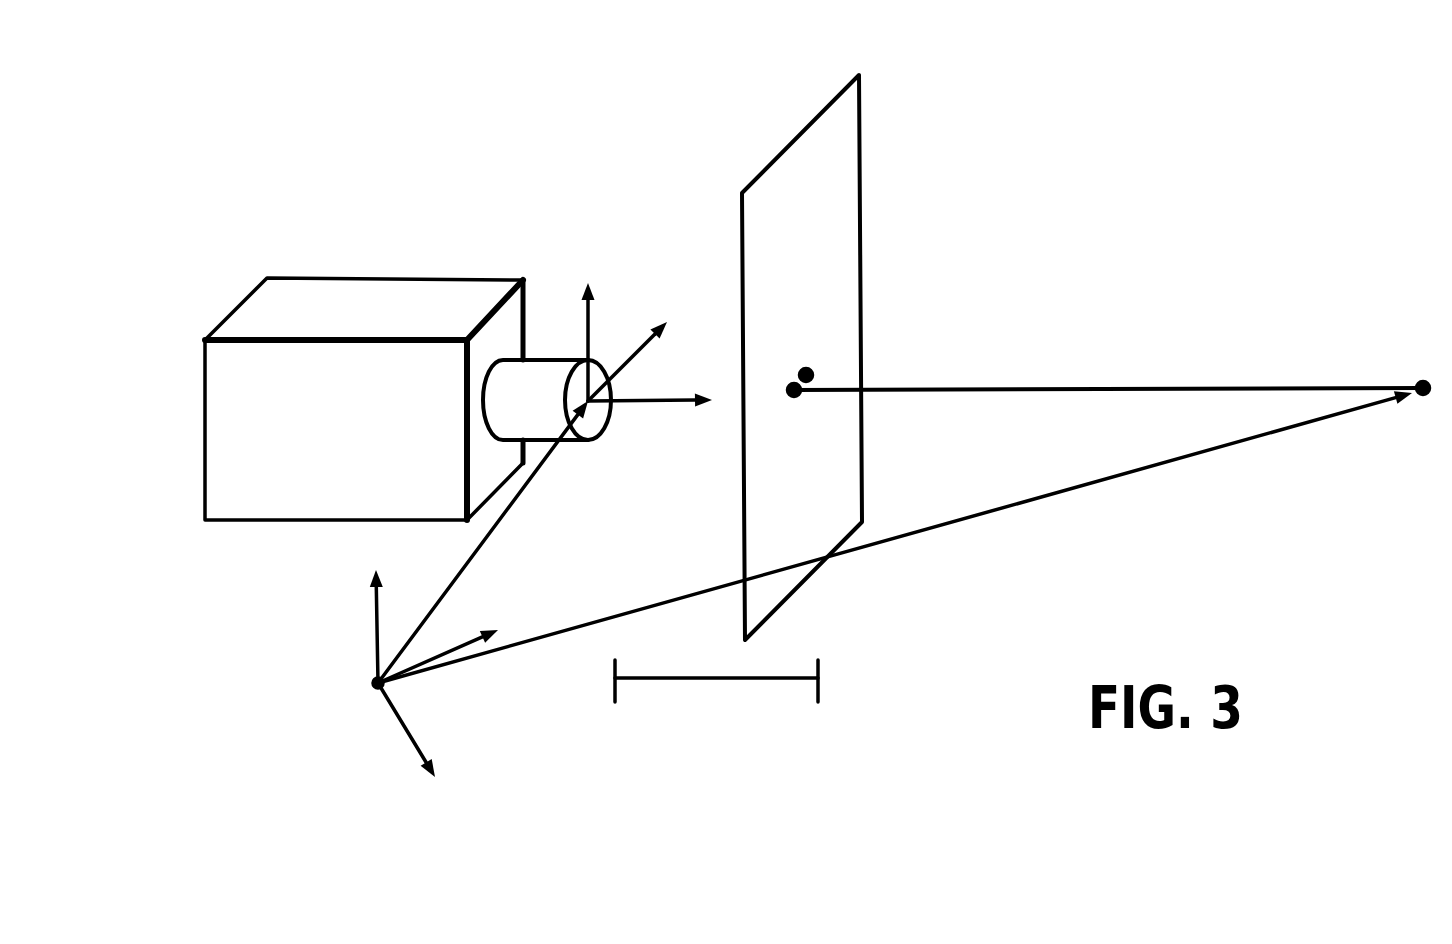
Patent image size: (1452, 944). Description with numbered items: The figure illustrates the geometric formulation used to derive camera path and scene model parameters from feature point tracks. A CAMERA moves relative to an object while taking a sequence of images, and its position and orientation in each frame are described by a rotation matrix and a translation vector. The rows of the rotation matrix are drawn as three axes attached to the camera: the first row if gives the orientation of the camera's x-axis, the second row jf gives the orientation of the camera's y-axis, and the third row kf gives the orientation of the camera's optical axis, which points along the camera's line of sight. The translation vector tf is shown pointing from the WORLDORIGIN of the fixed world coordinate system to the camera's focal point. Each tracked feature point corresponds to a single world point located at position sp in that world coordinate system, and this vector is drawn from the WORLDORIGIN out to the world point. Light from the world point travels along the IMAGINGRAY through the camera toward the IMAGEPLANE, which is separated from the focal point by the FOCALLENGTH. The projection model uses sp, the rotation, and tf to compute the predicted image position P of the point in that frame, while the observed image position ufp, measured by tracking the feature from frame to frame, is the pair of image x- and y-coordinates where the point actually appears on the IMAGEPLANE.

The camera CAMERA is at (408, 399).
The camera y-axis orientation jf is at (592, 313).
The camera x-axis orientation if is at (641, 338).
The camera optical axis orientation kf is at (659, 376).
The translation vector tf is at (483, 542).
The world origin WORLDORIGIN is at (317, 673).
The world point position sp is at (904, 533).
The image plane IMAGEPLANE is at (775, 354).
The predicted image position P is at (794, 390).
The observed image position ufp is at (806, 375).
The imaging ray IMAGINGRAY is at (1108, 370).
The focal length FOCALLENGTH is at (716, 711).